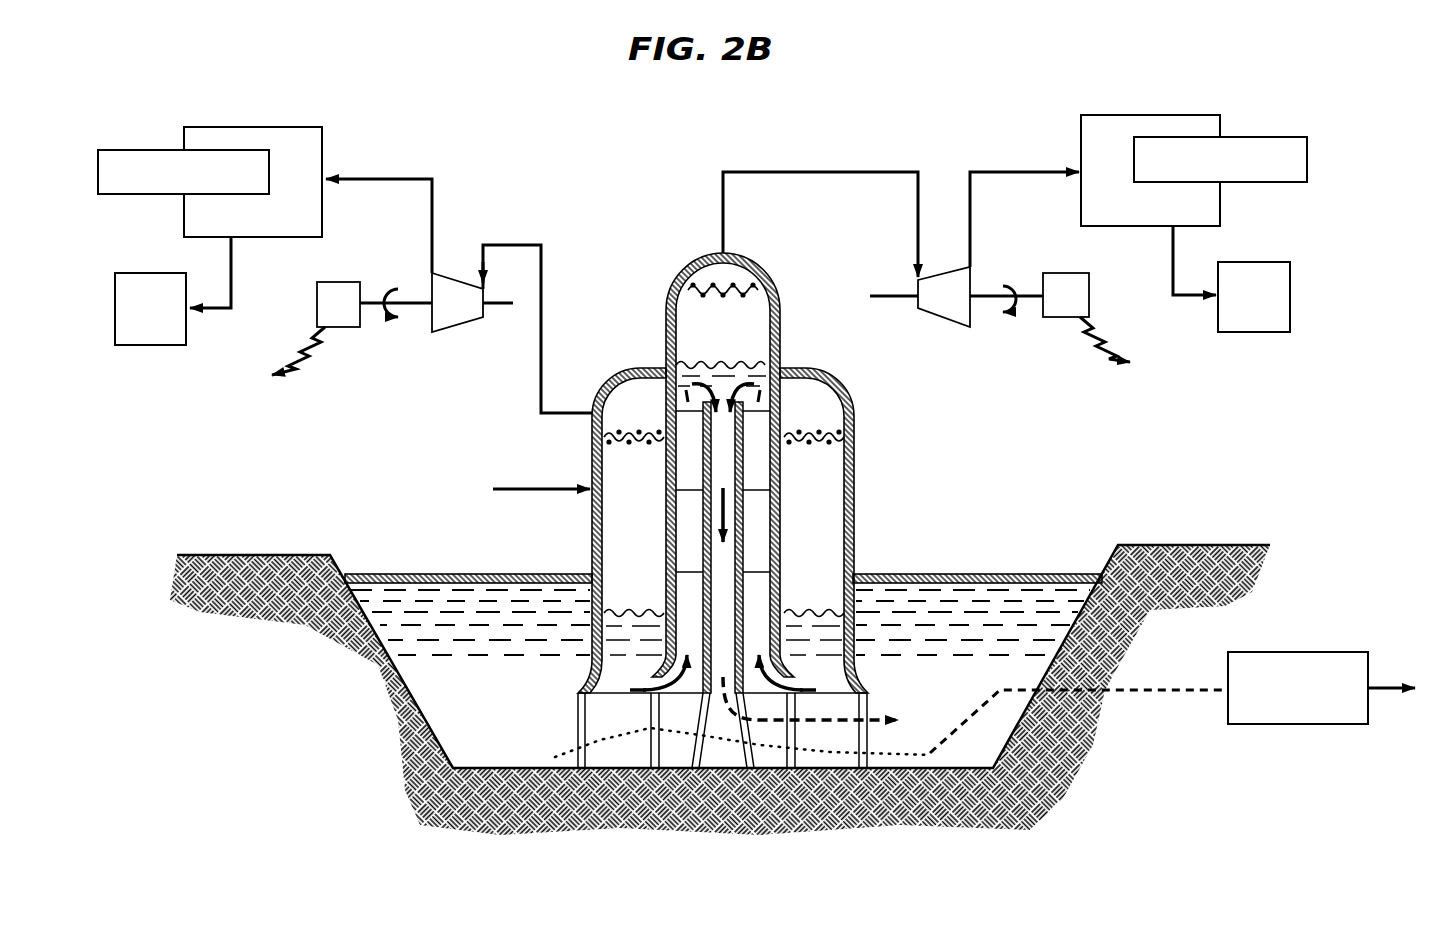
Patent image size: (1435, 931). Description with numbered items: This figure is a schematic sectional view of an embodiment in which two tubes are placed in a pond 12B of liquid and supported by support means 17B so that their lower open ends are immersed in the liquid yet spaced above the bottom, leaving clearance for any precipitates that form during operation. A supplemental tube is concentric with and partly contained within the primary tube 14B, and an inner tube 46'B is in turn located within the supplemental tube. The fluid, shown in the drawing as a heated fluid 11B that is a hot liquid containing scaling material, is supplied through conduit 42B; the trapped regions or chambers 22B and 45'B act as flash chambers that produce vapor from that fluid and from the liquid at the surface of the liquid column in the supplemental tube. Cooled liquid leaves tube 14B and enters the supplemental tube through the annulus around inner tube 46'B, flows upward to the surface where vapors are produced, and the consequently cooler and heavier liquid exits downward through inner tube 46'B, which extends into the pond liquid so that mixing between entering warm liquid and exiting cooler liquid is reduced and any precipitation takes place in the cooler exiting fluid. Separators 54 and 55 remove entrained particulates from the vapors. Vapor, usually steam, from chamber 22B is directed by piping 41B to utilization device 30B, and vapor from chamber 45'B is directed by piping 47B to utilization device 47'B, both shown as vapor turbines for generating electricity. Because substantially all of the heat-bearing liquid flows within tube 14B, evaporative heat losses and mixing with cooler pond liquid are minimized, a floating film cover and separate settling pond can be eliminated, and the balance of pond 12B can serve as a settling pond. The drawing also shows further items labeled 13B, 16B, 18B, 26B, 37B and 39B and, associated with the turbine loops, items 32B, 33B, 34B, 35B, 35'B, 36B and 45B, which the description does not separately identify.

The utilization device 30B is at (357, 133).
The cooling means 35'B is at (167, 143).
The condenser 35B is at (248, 127).
The vacuum pump 36B is at (147, 345).
The turbine exhaust conduit 34B is at (432, 190).
The piping 41B is at (545, 252).
The turbine 32B is at (453, 330).
The generator 33B is at (350, 328).
The primary tube 14B is at (683, 478).
The central riser conduit 16B is at (624, 390).
The flash chamber 22B is at (635, 397).
The upper flash chamber 45B is at (698, 258).
The separator 55 is at (737, 288).
The flash chamber 45'B is at (764, 321).
The separator 54 is at (815, 437).
The conduit 42B is at (812, 468).
The inner tube 46'B is at (762, 538).
The piping 47B is at (830, 172).
The utilization device 47'B is at (1127, 200).
The heated fluid (hot liquid containing scaling material) 11B is at (415, 505).
The inlet conduit 13B is at (527, 492).
The cover slab 18B is at (890, 574).
The pond 12B is at (1020, 574).
The support means 17B is at (578, 722).
The settled scaling material 37B is at (555, 757).
The outlet conduit 26B is at (972, 763).
The extraction means 39B is at (1268, 725).